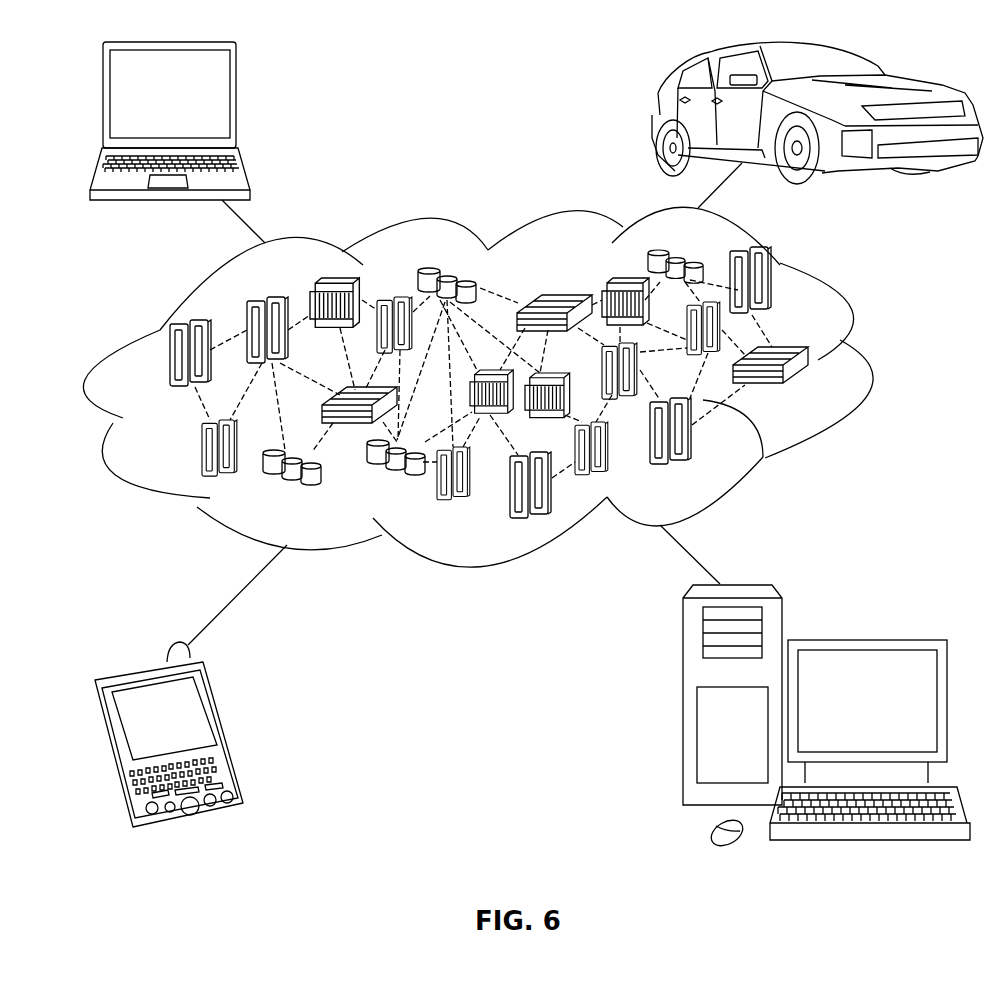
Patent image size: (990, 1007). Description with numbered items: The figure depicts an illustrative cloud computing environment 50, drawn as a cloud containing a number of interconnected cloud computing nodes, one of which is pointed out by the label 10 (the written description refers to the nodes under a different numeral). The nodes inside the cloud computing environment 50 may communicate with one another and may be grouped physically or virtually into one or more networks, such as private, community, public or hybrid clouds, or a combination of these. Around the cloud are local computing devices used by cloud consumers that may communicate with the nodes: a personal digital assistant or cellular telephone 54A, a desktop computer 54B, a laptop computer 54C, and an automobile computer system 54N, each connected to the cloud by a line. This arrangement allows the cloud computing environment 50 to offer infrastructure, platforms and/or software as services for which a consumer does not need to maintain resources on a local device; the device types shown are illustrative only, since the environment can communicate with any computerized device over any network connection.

The cloud computing node 10 is at (812, 394).
The cloud computing environment 50 is at (503, 387).
The personal digital assistant or cellular telephone 54A is at (227, 730).
The desktop computer 54B is at (866, 637).
The laptop computer 54C is at (237, 102).
The automobile computer system 54N is at (652, 115).